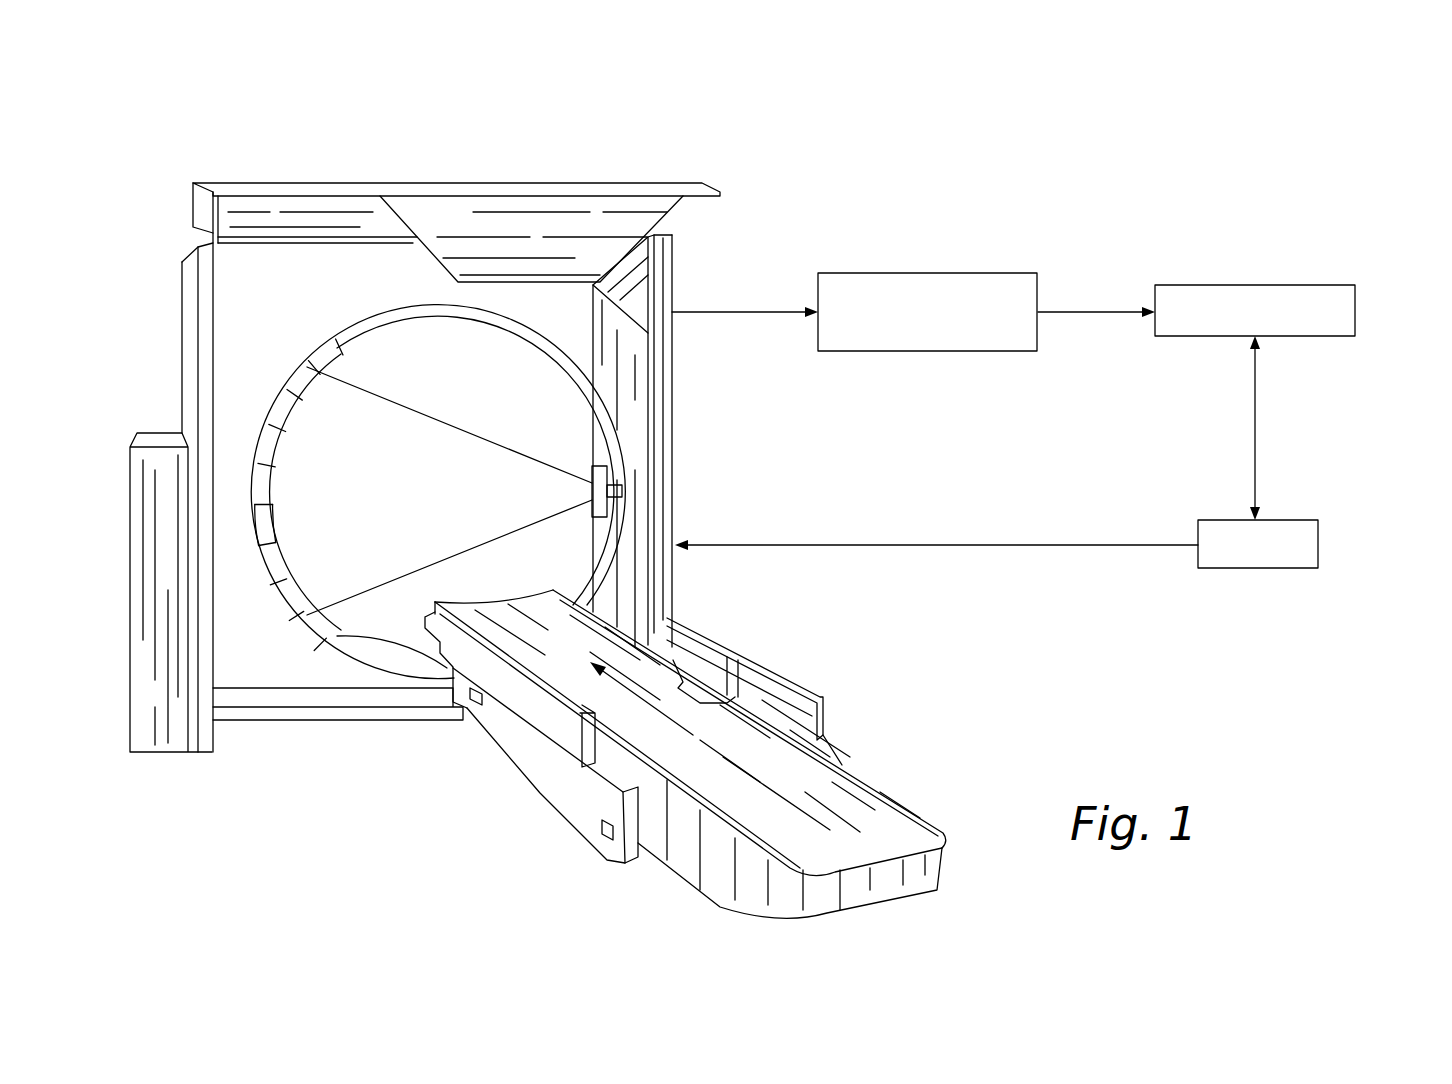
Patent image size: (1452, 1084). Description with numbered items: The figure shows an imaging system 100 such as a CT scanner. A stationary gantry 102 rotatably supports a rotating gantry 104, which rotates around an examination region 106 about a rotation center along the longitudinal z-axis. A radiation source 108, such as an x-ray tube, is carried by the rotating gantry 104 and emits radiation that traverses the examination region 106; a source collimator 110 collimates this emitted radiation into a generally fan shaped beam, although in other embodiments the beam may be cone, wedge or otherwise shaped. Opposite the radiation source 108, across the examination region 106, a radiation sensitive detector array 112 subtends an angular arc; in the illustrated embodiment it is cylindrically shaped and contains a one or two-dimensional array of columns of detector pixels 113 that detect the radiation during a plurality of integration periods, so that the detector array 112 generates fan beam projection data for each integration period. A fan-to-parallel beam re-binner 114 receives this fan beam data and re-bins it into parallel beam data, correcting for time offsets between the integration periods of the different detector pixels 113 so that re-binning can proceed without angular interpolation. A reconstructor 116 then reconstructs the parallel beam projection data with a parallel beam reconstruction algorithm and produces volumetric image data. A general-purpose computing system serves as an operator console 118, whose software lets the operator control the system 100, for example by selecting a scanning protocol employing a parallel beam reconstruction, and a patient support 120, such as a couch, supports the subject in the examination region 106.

The imaging system 100 is at (190, 146).
The stationary gantry 102 is at (572, 183).
The rotating gantry 104 is at (347, 333).
The examination region 106 is at (461, 498).
The radiation source 108 is at (623, 493).
The source collimator 110 is at (592, 468).
The radiation sensitive detector array 112 is at (263, 413).
The detector pixel 113 is at (267, 506).
The fan-to-parallel beam re-binner 114 is at (818, 292).
The reconstructor 116 is at (1355, 312).
The operator console 118 is at (1257, 568).
The patient support 120 is at (887, 827).